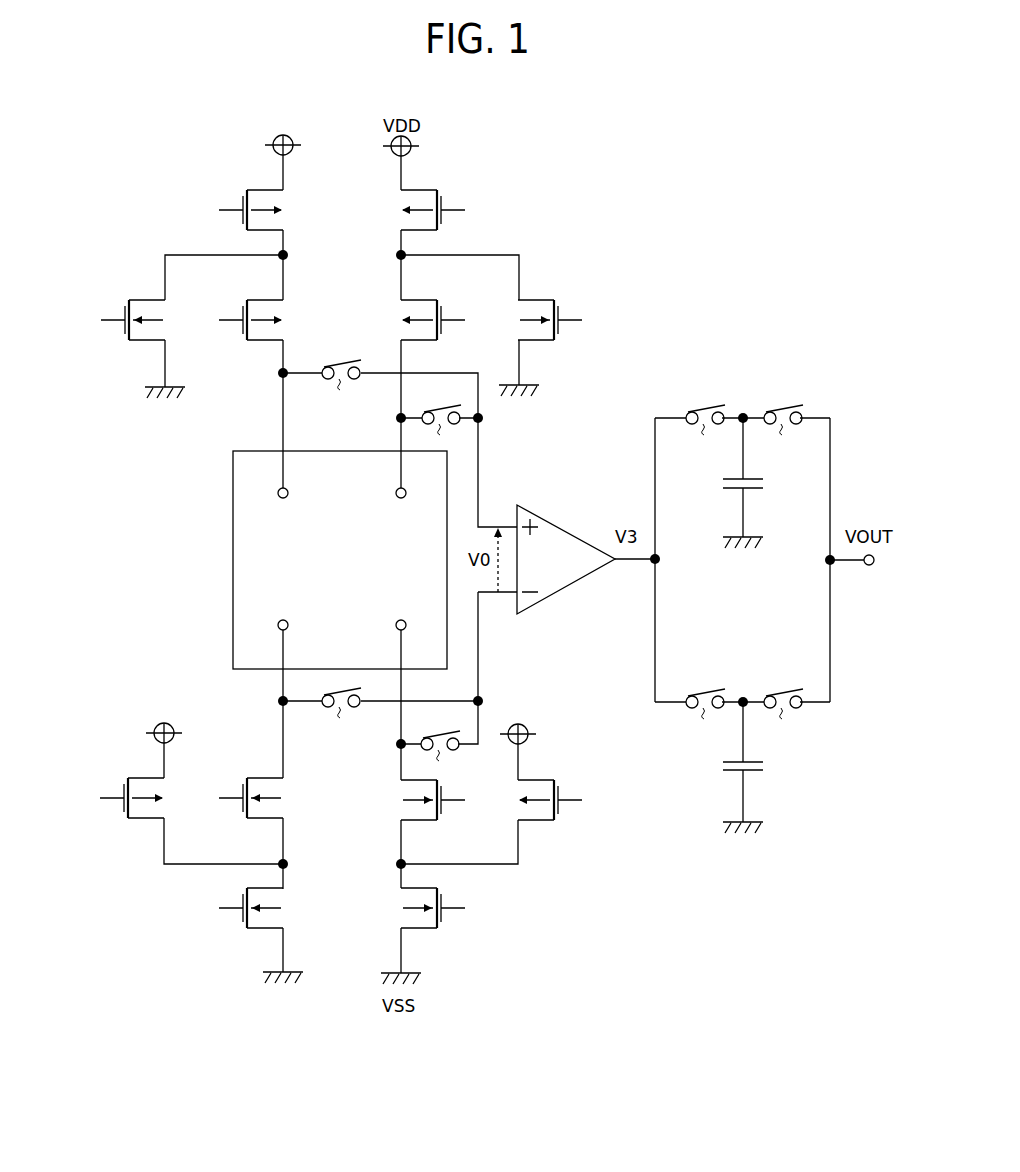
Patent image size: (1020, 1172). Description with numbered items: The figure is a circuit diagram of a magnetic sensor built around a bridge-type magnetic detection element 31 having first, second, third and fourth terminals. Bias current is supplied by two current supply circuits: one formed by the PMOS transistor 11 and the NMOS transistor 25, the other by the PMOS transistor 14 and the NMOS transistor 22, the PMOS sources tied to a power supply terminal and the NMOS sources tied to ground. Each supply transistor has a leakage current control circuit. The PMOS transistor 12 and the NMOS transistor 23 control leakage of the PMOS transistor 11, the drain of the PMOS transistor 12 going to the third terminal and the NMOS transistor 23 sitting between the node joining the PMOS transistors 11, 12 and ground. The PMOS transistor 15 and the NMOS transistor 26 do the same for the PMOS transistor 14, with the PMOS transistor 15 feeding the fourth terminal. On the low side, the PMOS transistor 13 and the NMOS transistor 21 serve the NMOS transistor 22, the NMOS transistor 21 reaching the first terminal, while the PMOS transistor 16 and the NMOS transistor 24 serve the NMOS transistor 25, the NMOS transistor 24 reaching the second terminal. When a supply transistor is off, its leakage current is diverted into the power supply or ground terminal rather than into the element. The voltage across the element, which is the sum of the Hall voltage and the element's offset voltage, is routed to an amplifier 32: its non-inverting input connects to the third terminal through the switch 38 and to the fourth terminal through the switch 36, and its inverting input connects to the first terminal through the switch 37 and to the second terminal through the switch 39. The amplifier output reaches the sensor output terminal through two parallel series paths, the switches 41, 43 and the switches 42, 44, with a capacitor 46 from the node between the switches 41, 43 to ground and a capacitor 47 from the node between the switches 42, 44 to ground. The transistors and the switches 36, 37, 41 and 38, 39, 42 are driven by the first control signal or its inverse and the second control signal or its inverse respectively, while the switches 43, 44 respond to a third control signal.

The PMOS transistor 11 is at (244, 190).
The PMOS transistor 12 is at (244, 300).
The PMOS transistor 13 is at (127, 820).
The PMOS transistor 14 is at (437, 190).
The PMOS transistor 15 is at (437, 300).
The PMOS transistor 16 is at (556, 822).
The NMOS transistor 21 is at (246, 820).
The NMOS transistor 22 is at (246, 930).
The NMOS transistor 23 is at (126, 300).
The NMOS transistor 24 is at (438, 822).
The NMOS transistor 25 is at (438, 930).
The NMOS transistor 26 is at (554, 300).
The magnetic detection element 31 is at (233, 540).
The amplifier 32 is at (560, 520).
The switch 36 is at (439, 419).
The switch 37 is at (380, 703).
The switch 38 is at (380, 381).
The switch 39 is at (439, 738).
The switch 41 is at (699, 419).
The switch 42 is at (699, 704).
The switch 43 is at (786, 419).
The switch 44 is at (786, 704).
The capacitor 46 is at (724, 491).
The capacitor 47 is at (724, 774).